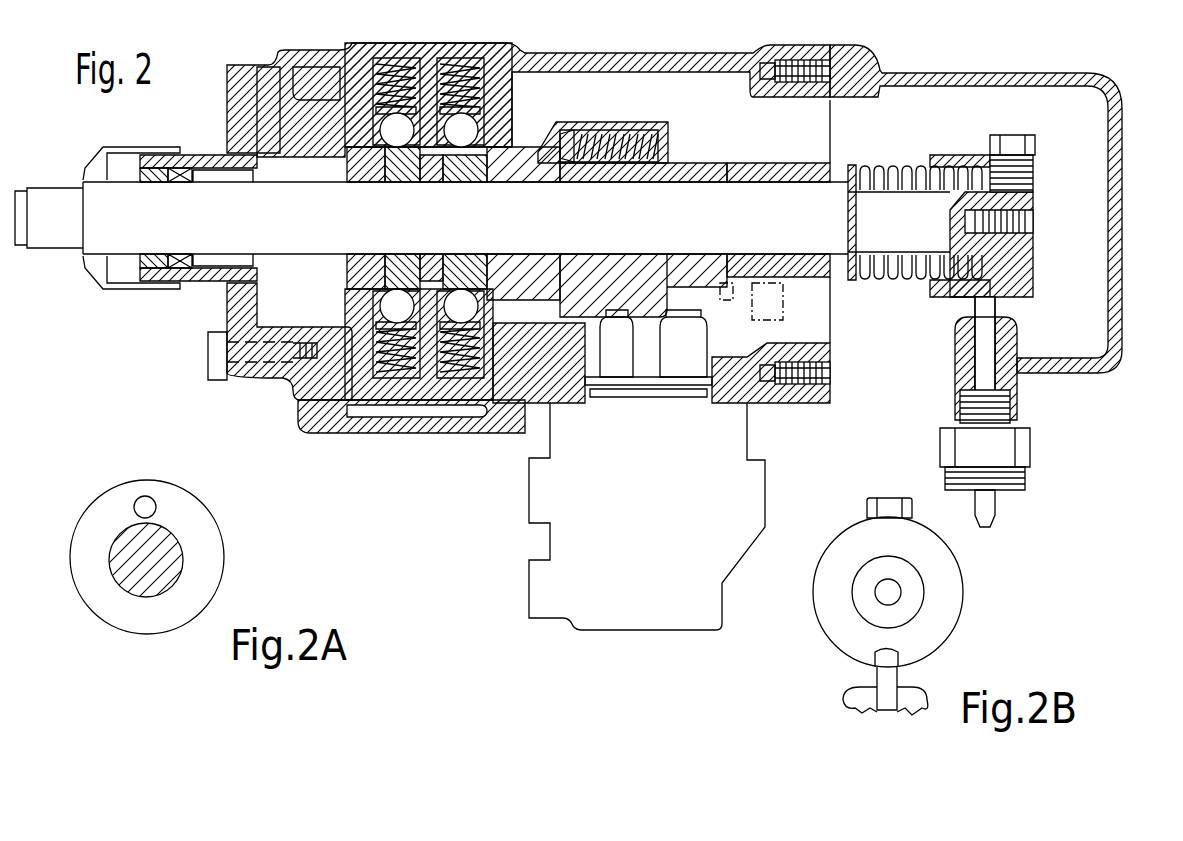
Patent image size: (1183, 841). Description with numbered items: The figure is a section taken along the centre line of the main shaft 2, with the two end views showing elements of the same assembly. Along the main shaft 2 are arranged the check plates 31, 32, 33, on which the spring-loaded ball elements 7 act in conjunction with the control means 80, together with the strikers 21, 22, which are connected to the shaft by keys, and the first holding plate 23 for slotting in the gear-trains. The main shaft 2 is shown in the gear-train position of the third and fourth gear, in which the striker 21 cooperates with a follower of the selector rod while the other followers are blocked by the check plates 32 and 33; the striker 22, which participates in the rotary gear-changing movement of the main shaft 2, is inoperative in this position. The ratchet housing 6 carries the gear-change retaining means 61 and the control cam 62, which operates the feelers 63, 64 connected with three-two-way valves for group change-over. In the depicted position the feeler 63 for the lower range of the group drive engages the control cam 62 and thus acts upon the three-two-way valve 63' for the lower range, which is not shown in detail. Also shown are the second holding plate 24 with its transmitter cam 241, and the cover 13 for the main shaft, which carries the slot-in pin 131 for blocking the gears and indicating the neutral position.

In FIG. 2, the main shaft 2 is at (100, 246).
In FIG. 2A, the main shaft 2 is at (178, 548).
In FIG. 2, the spring-loaded ball elements 7 is at (372, 65).
In FIG. 2, the ratchet housing 6 is at (590, 128).
In FIG. 2, the gear-change retaining means 61 is at (626, 140).
In FIG. 2, the cover 13 is at (1083, 73).
In FIG. 2, the second holding plate 24 is at (1033, 174).
In FIG. 2B, the second holding plate 24 is at (963, 597).
In FIG. 2, the check plate 31 is at (399, 172).
In FIG. 2, the striker 21 is at (437, 172).
In FIG. 2, the check plate 32 is at (452, 172).
In FIG. 2, the striker 22 is at (481, 172).
In FIG. 2, the check plate 33 is at (521, 168).
In FIG. 2A, the check plate 33 is at (205, 548).
In FIG. 2, the first holding plate 23 is at (364, 265).
In FIG. 2, the control means 80 is at (425, 292).
In FIG. 2, the feeler 63 is at (591, 343).
In FIG. 2, the control cam 62 is at (652, 310).
In FIG. 2, the feeler 64 is at (690, 327).
In FIG. 2, the 3/2-way-valve 63' is at (673, 516).
In FIG. 2, the slot-in pin 131 is at (988, 352).
In FIG. 2B, the slot-in pin 131 is at (890, 680).
In FIG. 2, the transmitter cam 241 is at (1025, 325).
In FIG. 2B, the transmitter cam 241 is at (870, 672).